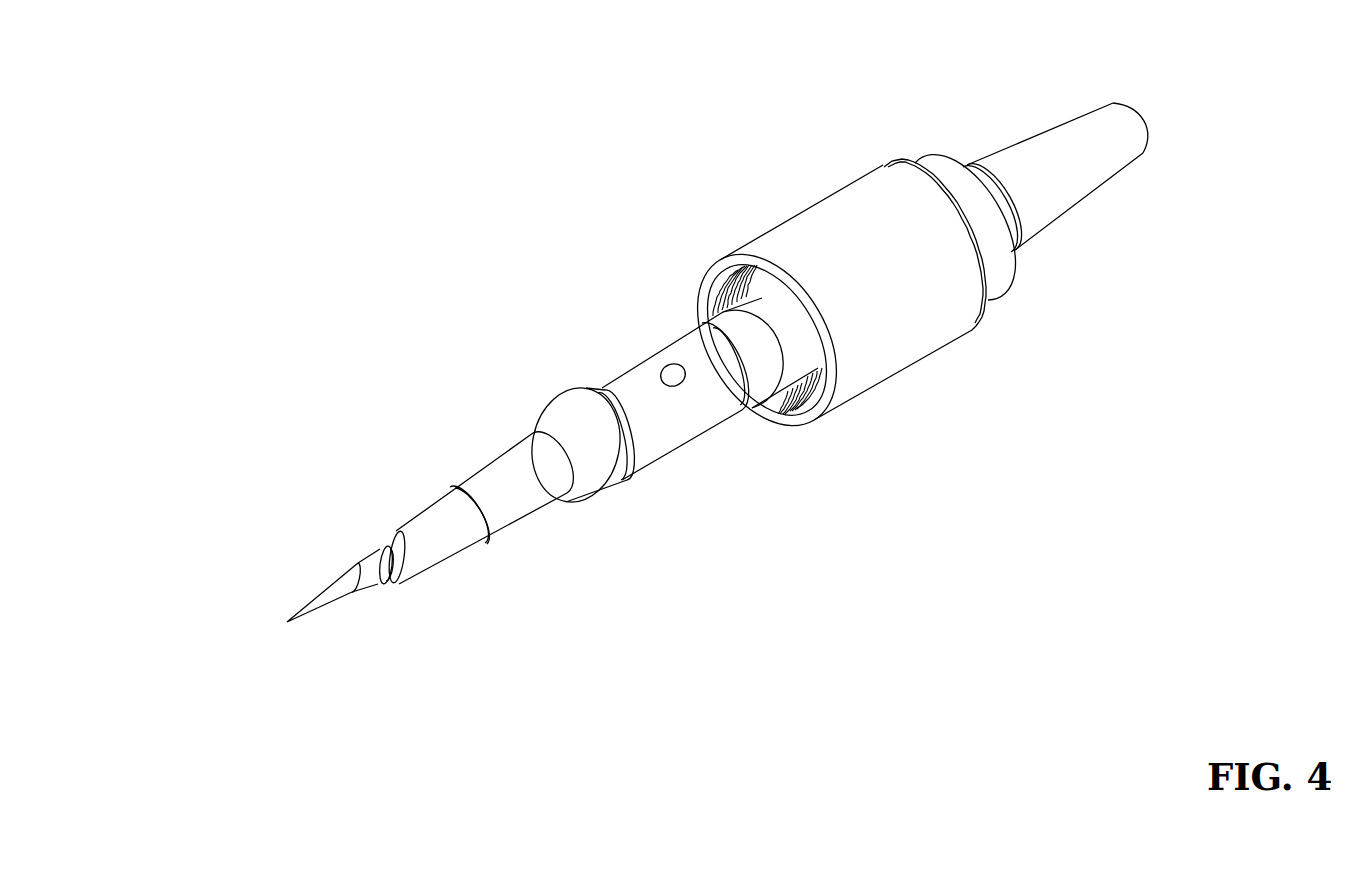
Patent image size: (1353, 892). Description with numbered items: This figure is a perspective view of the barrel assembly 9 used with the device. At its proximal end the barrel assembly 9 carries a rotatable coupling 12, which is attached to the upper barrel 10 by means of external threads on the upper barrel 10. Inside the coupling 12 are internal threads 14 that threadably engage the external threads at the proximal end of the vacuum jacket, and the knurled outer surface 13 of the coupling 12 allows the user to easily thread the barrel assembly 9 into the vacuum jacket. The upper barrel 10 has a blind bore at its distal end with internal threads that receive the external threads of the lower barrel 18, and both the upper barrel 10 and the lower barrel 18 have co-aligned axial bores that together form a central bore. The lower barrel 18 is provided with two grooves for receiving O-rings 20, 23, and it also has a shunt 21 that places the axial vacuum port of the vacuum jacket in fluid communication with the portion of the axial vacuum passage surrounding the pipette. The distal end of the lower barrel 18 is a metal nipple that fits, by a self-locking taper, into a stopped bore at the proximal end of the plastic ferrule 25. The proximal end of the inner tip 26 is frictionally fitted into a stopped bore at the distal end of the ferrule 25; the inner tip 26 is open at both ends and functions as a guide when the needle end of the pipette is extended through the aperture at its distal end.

The barrel assembly 9 is at (952, 563).
The upper barrel 10 is at (963, 174).
The rotatable coupling 12 is at (808, 277).
The knurled outer surface 13 is at (754, 305).
The internal threads 14 is at (787, 388).
The lower barrel 18 is at (527, 421).
The O-ring 20 is at (710, 441).
The shunt 21 is at (592, 330).
The O-ring 23 is at (565, 521).
The ferrule 25 is at (388, 496).
The inner tip 26 is at (304, 567).